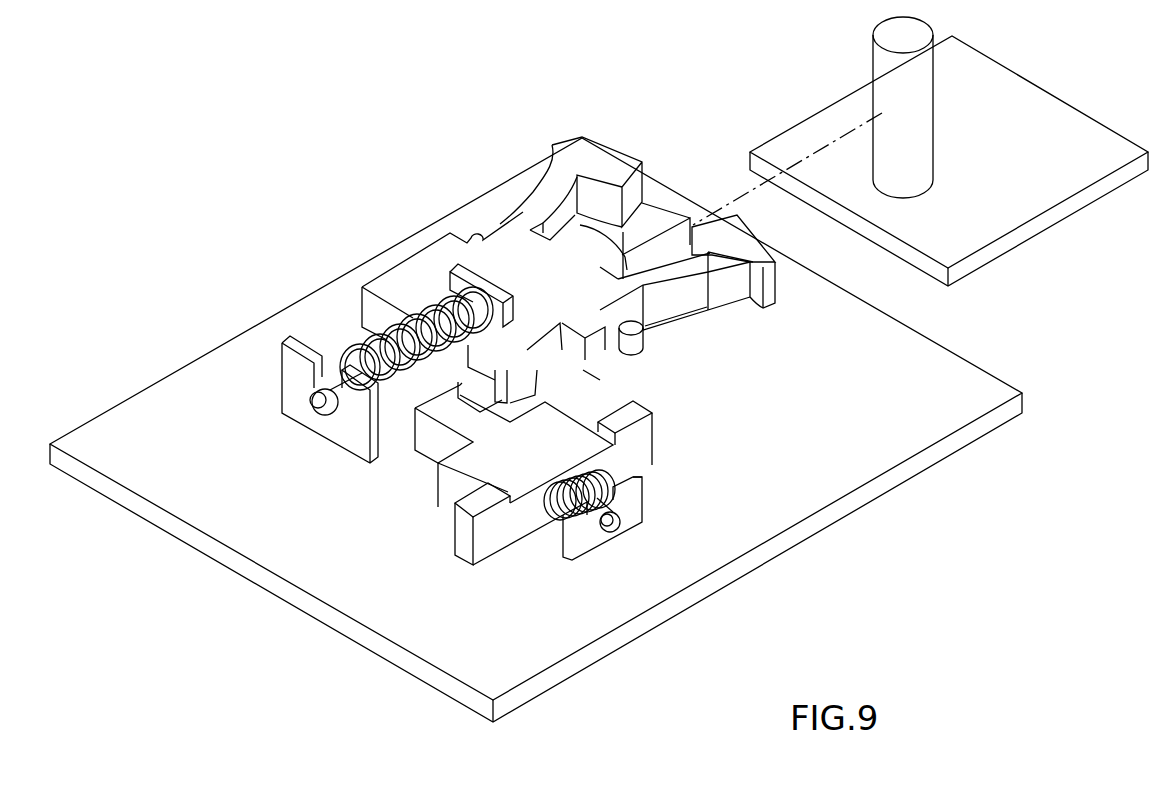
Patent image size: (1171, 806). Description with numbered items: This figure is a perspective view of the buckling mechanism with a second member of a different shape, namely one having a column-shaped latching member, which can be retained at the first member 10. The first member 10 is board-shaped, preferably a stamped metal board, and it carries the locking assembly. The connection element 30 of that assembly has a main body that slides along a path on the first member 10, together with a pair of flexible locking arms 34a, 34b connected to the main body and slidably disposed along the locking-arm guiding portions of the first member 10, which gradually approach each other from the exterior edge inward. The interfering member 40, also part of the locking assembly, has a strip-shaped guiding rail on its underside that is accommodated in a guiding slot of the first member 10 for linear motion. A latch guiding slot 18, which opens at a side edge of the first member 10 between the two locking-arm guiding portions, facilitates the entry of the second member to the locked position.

The first member 10 is at (963, 455).
The latch guiding slot 18 is at (670, 243).
The connection element 30 is at (491, 225).
The locking arm 34a is at (598, 157).
The locking arm 34b is at (728, 238).
The interfering member 40 is at (654, 441).